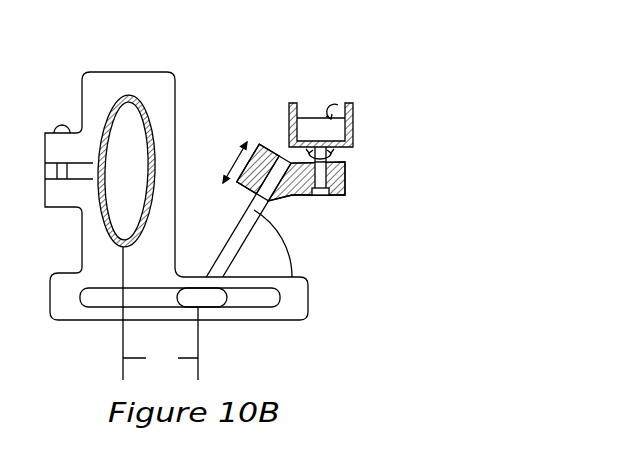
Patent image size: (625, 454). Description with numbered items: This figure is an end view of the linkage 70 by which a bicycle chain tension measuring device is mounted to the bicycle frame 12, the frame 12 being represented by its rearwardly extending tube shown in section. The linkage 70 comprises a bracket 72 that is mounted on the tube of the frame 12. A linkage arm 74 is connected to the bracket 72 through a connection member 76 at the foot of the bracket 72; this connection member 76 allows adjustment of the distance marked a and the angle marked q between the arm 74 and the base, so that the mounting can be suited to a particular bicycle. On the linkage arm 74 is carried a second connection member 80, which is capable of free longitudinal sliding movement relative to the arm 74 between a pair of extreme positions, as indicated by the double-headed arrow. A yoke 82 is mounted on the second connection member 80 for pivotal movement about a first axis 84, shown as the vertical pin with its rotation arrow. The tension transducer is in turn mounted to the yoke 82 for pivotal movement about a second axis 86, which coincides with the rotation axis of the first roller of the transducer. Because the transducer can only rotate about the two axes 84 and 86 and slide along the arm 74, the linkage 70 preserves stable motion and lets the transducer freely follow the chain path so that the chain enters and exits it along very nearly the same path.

The frame 12 is at (115, 102).
The linkage 70 is at (297, 208).
The bracket 72 is at (132, 72).
The linkage arm 74 is at (252, 230).
The connection member 76 is at (228, 320).
The second connection member 80 is at (236, 187).
The yoke 82 is at (353, 124).
The first axis 84 is at (322, 196).
The second axis 86 is at (322, 102).